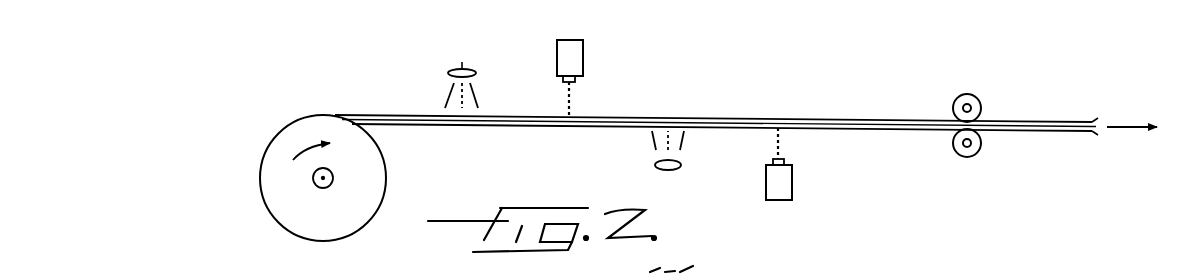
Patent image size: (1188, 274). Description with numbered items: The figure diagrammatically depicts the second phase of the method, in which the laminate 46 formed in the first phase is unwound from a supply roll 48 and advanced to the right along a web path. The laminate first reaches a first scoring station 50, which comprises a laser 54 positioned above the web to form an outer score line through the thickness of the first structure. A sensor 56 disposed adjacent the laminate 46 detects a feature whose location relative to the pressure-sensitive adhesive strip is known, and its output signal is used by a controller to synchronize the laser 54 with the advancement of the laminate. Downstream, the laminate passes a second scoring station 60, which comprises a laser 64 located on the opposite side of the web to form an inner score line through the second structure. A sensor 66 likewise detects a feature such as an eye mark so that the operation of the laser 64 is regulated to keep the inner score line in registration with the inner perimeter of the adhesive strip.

The laminate 46 is at (386, 106).
The supply roll 48 is at (270, 166).
The first scoring station 50 is at (573, 58).
The laser 54 is at (576, 62).
The sensor 56 is at (456, 62).
The second scoring station 60 is at (822, 178).
The laser 64 is at (790, 173).
The sensor 66 is at (655, 165).